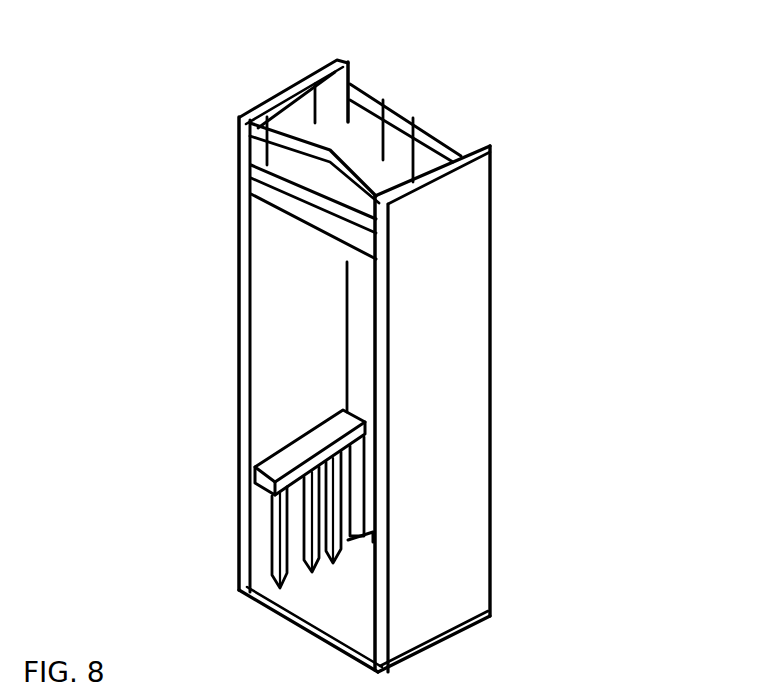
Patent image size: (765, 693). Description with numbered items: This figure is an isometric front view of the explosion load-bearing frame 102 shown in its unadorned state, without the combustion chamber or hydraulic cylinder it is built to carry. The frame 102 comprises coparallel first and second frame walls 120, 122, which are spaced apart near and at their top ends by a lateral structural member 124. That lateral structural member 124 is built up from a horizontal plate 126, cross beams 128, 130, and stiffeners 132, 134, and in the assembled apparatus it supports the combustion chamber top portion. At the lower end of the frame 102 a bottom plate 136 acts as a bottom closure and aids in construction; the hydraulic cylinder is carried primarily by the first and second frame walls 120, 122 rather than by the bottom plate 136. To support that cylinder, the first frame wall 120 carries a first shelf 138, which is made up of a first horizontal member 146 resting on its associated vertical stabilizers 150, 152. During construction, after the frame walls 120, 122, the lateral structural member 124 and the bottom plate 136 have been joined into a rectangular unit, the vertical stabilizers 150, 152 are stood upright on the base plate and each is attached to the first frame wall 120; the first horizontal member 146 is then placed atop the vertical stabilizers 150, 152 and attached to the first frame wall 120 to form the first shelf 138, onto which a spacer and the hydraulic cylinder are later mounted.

The frame 102 is at (593, 89).
The first frame wall 120 is at (275, 289).
The second frame wall 122 is at (462, 340).
The lateral structural member 124 is at (368, 97).
The horizontal plate 126 is at (273, 197).
The cross beam 128 is at (291, 139).
The cross beam 130 is at (415, 125).
The stiffener 132 is at (378, 113).
The stiffener 134 is at (423, 153).
The bottom plate 136 is at (316, 602).
The first shelf 138 is at (256, 478).
The first horizontal member 146 is at (290, 456).
The vertical stabilizer 150 is at (318, 533).
The vertical stabilizer 152 is at (320, 535).